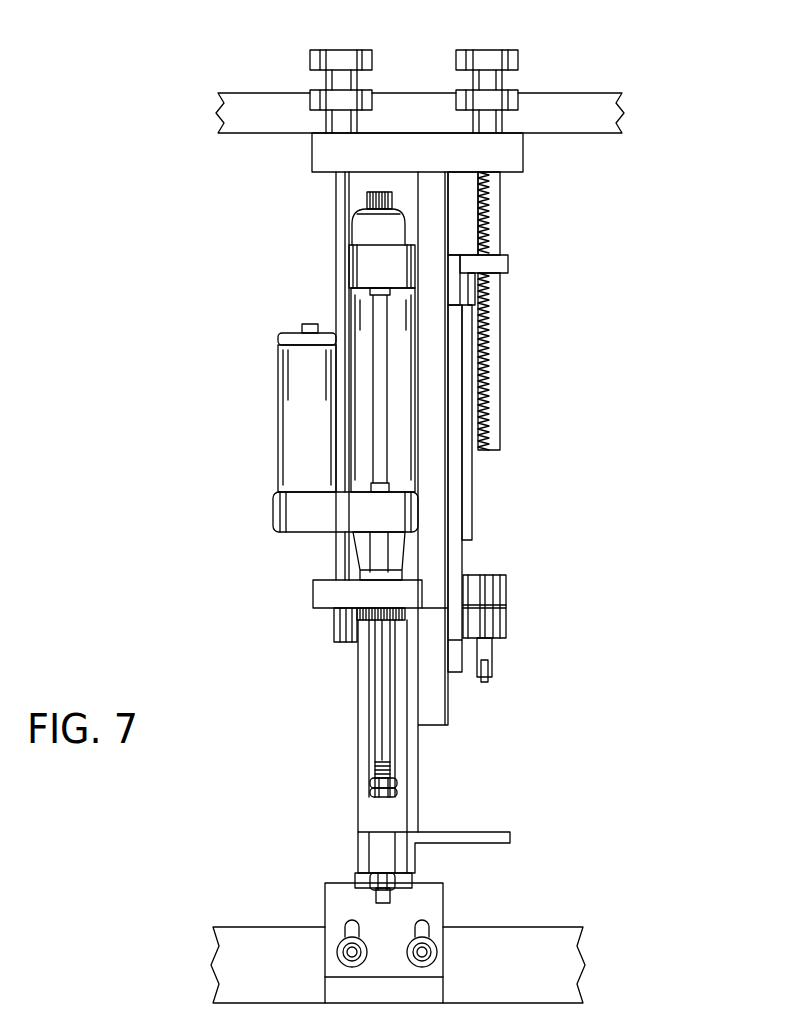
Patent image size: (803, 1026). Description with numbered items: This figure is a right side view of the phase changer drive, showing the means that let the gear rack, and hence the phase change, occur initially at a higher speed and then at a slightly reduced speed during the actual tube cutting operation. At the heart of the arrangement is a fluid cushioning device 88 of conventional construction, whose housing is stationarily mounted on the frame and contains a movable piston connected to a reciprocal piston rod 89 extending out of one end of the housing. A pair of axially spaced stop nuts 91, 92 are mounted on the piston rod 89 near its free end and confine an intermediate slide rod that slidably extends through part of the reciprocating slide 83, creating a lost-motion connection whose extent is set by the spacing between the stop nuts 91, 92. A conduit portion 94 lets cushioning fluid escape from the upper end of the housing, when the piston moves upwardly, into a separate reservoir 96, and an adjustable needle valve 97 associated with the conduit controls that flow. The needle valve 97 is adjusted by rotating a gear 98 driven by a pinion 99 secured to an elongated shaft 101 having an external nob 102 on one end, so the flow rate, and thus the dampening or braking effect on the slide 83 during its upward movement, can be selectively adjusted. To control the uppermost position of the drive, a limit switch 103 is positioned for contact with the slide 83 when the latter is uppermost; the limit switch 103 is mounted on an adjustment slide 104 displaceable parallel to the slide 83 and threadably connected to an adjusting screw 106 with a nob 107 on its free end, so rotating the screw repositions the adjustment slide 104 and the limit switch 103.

The reciprocating slide 83 is at (375, 852).
The fluid cushioning device 88 is at (346, 224).
The reciprocal piston rod 89 is at (382, 737).
The stop nut 91 is at (400, 786).
The stop nut 92 is at (400, 893).
The conduit portion 94 is at (378, 318).
The reservoir 96 is at (297, 438).
The adjustable needle valve 97 is at (378, 552).
The gear 98 is at (375, 619).
The pinion 99 is at (338, 624).
The elongated shaft 101 is at (340, 237).
The nob 102 is at (340, 80).
The limit switch 103 is at (497, 618).
The adjustment slide 104 is at (457, 555).
The adjusting screw 106 is at (500, 352).
The nob 107 is at (495, 62).